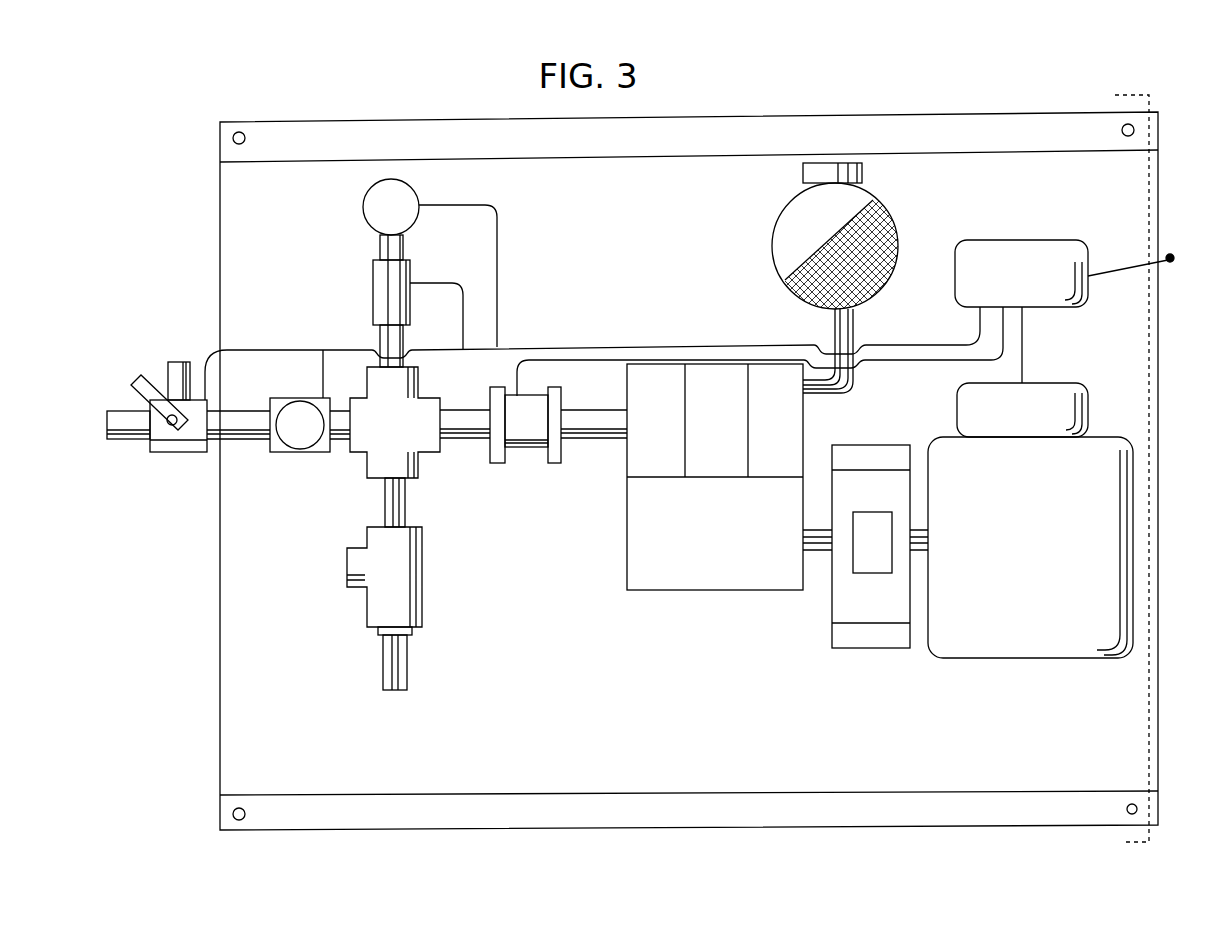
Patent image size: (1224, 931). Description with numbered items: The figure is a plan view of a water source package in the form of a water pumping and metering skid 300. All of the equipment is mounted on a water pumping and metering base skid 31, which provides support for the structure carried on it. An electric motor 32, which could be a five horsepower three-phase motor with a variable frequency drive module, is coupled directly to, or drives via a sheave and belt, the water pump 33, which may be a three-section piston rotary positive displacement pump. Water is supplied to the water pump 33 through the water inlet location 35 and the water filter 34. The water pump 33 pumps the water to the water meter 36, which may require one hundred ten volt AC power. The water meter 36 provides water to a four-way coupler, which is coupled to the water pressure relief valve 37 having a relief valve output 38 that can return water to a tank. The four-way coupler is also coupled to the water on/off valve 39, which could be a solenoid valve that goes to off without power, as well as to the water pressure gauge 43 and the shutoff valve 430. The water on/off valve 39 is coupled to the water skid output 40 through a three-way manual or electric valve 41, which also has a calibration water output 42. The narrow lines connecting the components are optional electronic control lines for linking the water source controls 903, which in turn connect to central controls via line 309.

The water pumping and metering skid 300 is at (721, 92).
The water pumping and metering base skid 31 is at (1128, 828).
The electric motor 32 is at (985, 658).
The water pump 33 is at (718, 590).
The water filter 34 is at (893, 219).
The water inlet location 35 is at (833, 163).
The water meter 36 is at (528, 452).
The water pressure relief valve 37 is at (390, 692).
The relief valve output 38 is at (347, 563).
The water on/off valve 39 is at (302, 398).
The water skid output 40 is at (107, 432).
The 3-way manual or electric valve 41 is at (133, 383).
The calibration water output 42 is at (179, 360).
The water pressure gauge 43 is at (388, 179).
The shutoff valve 430 is at (373, 283).
The line 309 is at (1148, 252).
The water source controls 903 is at (1021, 273).